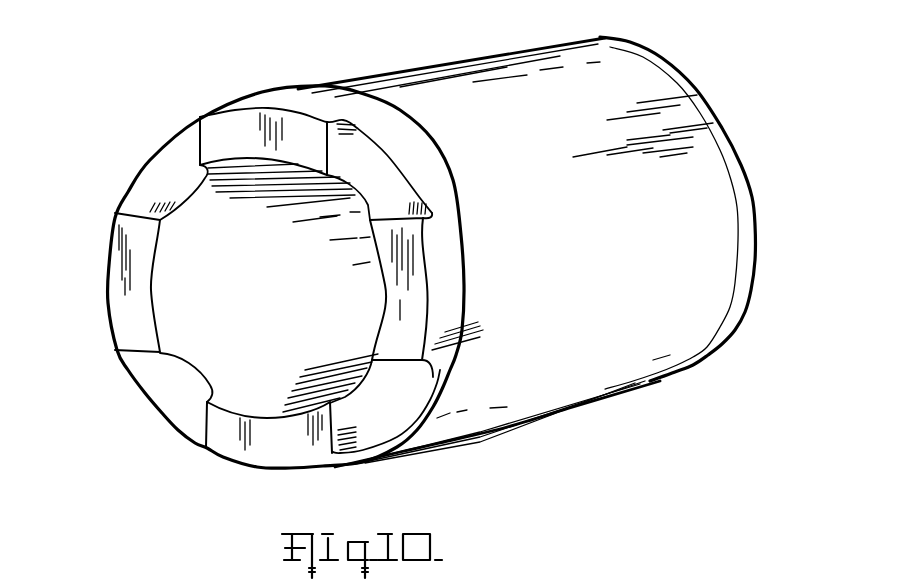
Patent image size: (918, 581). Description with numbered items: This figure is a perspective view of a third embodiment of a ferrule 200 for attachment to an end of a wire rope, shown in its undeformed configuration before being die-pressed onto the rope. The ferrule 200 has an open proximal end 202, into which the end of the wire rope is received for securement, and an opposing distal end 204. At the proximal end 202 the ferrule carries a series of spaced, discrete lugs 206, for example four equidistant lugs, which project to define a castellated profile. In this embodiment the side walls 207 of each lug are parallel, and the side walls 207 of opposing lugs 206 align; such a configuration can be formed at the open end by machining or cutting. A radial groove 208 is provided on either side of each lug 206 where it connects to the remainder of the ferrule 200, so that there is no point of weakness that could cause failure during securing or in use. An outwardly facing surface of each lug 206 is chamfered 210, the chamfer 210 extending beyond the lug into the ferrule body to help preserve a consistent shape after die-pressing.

The ferrule 200 is at (528, 35).
The open proximal end 202 is at (192, 294).
The distal end 204 is at (660, 93).
The lugs 206 is at (227, 137).
The side walls 207 is at (333, 153).
The radial groove 208 is at (125, 200).
The chamfer 210 is at (303, 103).